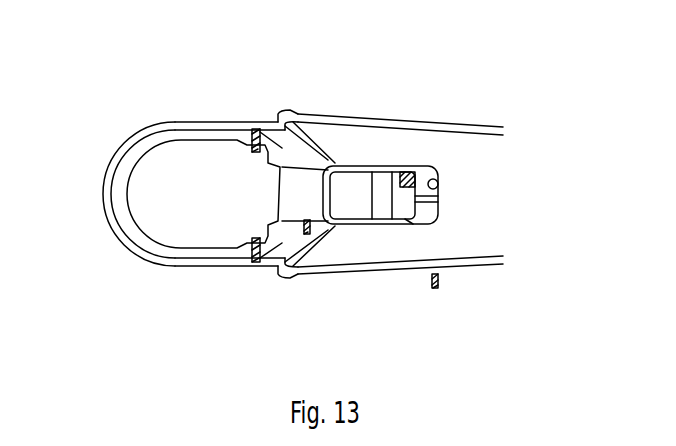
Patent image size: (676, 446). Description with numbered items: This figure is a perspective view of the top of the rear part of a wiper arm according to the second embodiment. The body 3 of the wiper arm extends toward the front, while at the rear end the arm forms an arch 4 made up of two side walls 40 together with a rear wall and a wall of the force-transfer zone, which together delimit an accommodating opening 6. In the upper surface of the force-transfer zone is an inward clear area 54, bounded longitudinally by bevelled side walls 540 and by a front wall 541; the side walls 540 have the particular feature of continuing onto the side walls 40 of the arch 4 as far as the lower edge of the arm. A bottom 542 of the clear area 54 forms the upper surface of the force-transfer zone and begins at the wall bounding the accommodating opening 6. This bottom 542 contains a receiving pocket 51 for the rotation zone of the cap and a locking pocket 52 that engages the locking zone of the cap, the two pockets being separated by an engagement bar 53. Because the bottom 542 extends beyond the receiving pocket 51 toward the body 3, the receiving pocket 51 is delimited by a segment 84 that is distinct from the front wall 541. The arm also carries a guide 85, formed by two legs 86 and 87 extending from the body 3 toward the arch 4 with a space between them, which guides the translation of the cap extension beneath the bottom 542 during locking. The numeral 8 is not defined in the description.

The body 3 is at (480, 125).
The arch 4 is at (118, 222).
The accommodating opening 6 is at (199, 200).
The sole 8 is at (437, 292).
The side walls 40 is at (231, 124).
The receiving pocket 51 is at (440, 193).
The locking pocket 52 is at (360, 201).
The engagement bar 53 is at (372, 186).
The clear area 54 is at (303, 270).
The segment 84 is at (427, 199).
The guide 85 is at (422, 158).
The leg 86 is at (393, 168).
The leg 87 is at (413, 228).
The side walls 540 is at (277, 125).
The front wall 541 is at (432, 168).
The bottom 542 is at (440, 202).